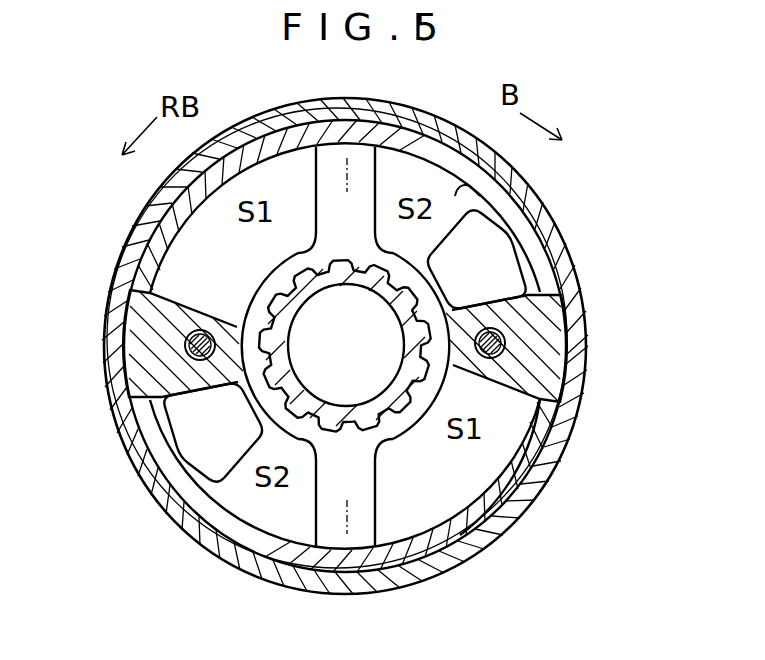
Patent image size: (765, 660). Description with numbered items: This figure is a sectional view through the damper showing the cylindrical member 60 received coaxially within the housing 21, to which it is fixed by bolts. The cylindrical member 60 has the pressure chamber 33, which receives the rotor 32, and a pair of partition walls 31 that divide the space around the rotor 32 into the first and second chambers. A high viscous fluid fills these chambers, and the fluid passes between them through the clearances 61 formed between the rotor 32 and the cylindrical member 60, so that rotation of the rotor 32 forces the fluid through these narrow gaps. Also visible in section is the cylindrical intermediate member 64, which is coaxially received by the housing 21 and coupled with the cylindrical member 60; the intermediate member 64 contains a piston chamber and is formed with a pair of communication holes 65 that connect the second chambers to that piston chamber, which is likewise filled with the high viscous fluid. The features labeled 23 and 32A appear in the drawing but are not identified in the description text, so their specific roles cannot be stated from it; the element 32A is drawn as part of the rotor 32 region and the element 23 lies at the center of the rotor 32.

The housing 21 is at (557, 452).
The rotor shaft 23 is at (390, 410).
The partition walls 31 is at (226, 317).
The rotor 32 is at (270, 285).
The vane of rotor 32A is at (362, 195).
The pressure chamber 33 is at (503, 178).
The cylindrical member 60 is at (527, 228).
The clearances 61 is at (207, 375).
The cylindrical intermediate member 64 is at (497, 455).
The communication holes 65 is at (530, 273).